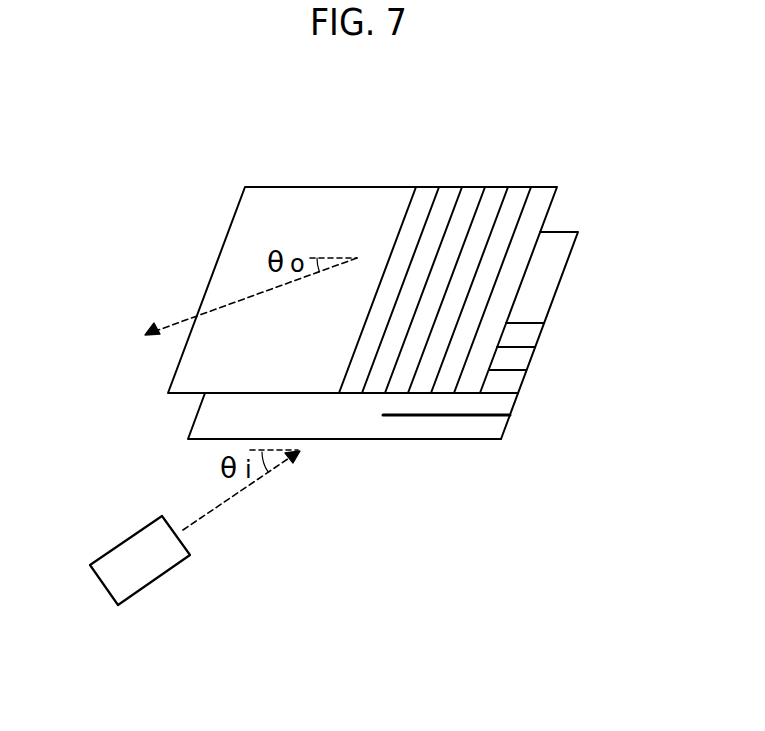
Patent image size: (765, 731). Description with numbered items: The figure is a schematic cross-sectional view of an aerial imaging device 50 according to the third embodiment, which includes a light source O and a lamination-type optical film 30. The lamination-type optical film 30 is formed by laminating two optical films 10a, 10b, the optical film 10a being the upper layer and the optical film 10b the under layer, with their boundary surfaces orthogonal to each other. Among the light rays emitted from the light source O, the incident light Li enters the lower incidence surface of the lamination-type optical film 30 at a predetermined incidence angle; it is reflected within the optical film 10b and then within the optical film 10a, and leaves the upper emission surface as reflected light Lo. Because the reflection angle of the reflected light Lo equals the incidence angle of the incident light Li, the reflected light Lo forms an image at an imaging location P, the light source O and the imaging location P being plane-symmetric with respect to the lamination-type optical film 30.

The aerial imaging device 50 is at (598, 138).
The lamination-type optical film 30 is at (568, 183).
The optical film 10a is at (247, 206).
The optical film 10b is at (200, 422).
The light source O is at (140, 580).
The imaging location P is at (122, 340).
The incident light Li is at (241, 493).
The reflected light Lo is at (251, 296).